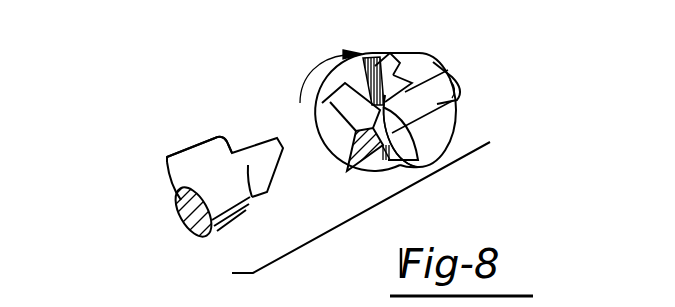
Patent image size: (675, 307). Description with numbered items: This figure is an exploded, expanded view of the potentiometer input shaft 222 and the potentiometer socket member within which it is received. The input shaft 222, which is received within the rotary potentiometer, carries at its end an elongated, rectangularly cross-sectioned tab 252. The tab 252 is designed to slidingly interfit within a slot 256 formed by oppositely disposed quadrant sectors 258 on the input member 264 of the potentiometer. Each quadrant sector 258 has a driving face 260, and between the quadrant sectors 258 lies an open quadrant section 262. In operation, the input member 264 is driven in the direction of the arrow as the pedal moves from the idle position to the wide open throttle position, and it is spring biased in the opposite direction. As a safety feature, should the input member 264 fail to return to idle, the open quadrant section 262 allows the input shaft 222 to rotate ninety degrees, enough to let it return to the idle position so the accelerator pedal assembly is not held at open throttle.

The potentiometer input shaft 222 is at (172, 152).
The tab 252 is at (210, 159).
The slot 256 is at (367, 68).
The quadrant sectors 258 is at (447, 130).
The driving face 260 is at (380, 150).
The open quadrant section 262 is at (430, 56).
The input member 264 is at (462, 92).